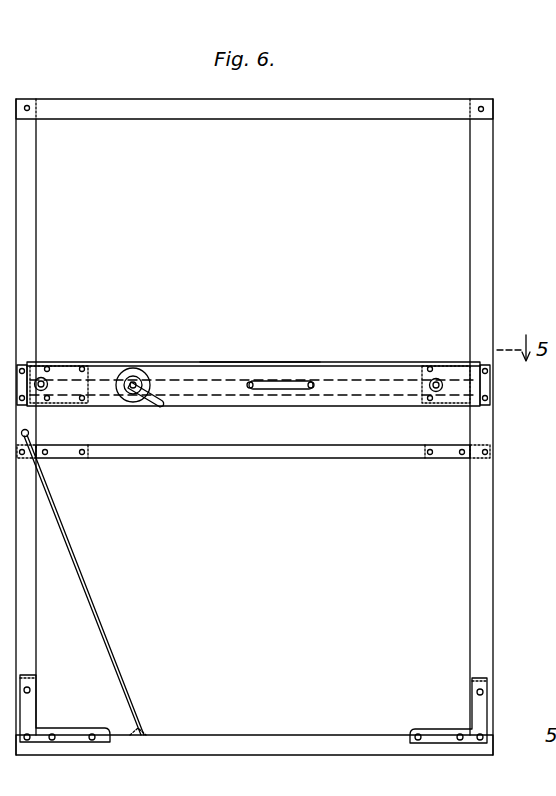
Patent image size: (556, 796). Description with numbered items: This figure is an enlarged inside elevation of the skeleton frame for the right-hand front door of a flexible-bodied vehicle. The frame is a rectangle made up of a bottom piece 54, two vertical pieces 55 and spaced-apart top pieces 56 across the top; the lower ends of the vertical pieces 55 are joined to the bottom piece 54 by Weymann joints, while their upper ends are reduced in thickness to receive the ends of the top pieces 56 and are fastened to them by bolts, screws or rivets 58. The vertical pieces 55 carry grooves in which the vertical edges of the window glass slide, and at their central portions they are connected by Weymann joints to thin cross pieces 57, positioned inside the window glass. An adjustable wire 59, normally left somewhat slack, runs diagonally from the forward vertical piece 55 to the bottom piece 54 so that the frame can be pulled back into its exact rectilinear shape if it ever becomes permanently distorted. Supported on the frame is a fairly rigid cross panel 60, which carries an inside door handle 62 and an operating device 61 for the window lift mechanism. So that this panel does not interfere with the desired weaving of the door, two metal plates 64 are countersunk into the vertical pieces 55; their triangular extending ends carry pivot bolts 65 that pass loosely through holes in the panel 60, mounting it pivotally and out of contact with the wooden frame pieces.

The bottom piece 54 is at (291, 735).
The vertical pieces 55 is at (36, 293).
The top pieces 56 is at (361, 99).
The cross pieces 57 is at (251, 459).
The bolts, screws or rivets 58 is at (29, 105).
The adjustable wire 59 is at (88, 596).
The cross panel 60 is at (252, 369).
The operating device 61 is at (140, 383).
The inside door handle 62 is at (291, 383).
The metal plates 64 is at (494, 381).
The pivot bolts 65 is at (46, 380).